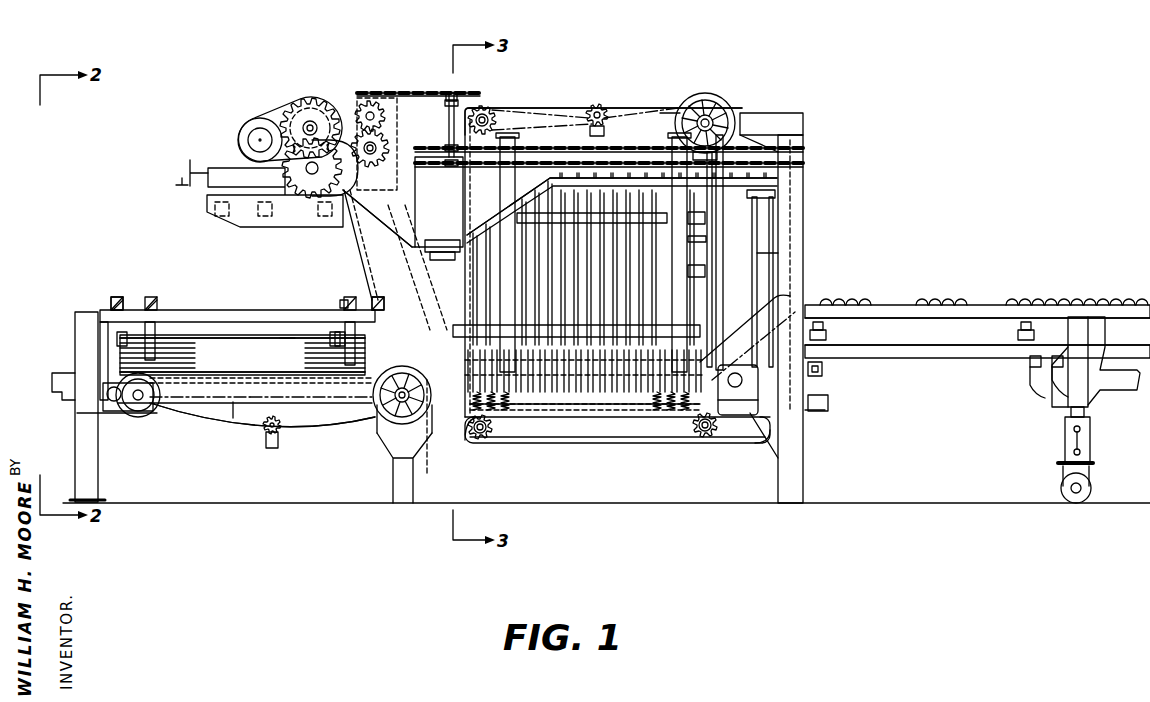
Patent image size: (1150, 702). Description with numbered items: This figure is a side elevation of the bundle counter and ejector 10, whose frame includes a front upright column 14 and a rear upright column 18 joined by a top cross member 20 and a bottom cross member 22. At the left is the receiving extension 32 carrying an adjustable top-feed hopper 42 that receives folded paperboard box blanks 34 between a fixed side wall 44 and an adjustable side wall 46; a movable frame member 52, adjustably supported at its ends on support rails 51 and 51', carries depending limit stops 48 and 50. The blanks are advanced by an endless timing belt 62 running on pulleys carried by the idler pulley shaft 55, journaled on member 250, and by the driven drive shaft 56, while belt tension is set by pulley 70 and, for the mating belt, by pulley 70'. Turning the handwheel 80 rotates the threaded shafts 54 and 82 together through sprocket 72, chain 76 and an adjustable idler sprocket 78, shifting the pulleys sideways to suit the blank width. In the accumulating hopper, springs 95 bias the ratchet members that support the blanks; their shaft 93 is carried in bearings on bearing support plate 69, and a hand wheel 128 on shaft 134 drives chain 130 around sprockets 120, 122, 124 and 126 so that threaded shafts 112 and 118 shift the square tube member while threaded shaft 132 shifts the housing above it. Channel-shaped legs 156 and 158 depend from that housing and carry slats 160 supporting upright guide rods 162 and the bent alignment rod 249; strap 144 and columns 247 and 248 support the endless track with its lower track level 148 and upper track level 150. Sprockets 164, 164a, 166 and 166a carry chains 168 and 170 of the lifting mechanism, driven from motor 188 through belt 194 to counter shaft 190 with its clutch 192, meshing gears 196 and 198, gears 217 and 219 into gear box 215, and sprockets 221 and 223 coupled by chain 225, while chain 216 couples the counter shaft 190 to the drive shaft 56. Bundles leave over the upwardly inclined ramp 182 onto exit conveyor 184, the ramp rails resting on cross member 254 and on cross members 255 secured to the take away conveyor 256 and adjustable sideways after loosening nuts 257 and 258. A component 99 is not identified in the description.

The bundle counter and ejector 10 is at (632, 95).
The front upright column 14 is at (397, 259).
The rear upright column 18 is at (800, 200).
The top cross member 20 is at (573, 112).
The bottom cross member 22 is at (583, 443).
The receiving extension 32 is at (225, 296).
The paperboard box blanks 34 is at (210, 348).
The adjustable top-feed hopper 42 is at (287, 328).
The fixed side wall 44 is at (125, 340).
The adjustable side wall 46 is at (345, 345).
The limit stop 48 is at (150, 322).
The limit stop 50 is at (347, 320).
The support rail 51 is at (100, 287).
The support rail 51' is at (382, 295).
The movable frame member 52 is at (252, 310).
The threaded shaft 54 is at (136, 414).
The timing belt idler pulley shaft 55 is at (112, 402).
The timing belt drive shaft 56 is at (429, 462).
The endless timing belt 62 is at (238, 410).
The bearing support plate 69 is at (452, 420).
The tension pulley 70 is at (200, 396).
The tension pulley 70' is at (311, 396).
The sprocket 72 is at (142, 414).
The chain 76 is at (302, 426).
The adjustable idler sprocket 78 is at (272, 436).
The handwheel 80 is at (405, 424).
The threaded shaft 82 is at (385, 422).
The shaft 93 is at (738, 388).
The springs 95 is at (515, 410).
The housing 99 is at (758, 414).
The threaded shaft 112 is at (492, 437).
The threaded shaft 118 is at (700, 438).
The sprocket 120 is at (480, 440).
The sprocket 122 is at (712, 442).
The sprocket 124 is at (489, 116).
The sprocket 126 is at (722, 96).
The hand wheel 128 is at (733, 106).
The chain 130 is at (662, 112).
The threaded shaft 132 is at (493, 110).
The shaft 134 is at (714, 123).
The support member 144 is at (547, 182).
The lower track level 148 is at (460, 247).
The upper track level 150 is at (775, 194).
The channel-shaped leg 156 is at (510, 299).
The channel-shaped leg 158 is at (706, 239).
The slats 160 is at (705, 218).
The upright guide rods 162 is at (742, 294).
The sprocket 164 is at (455, 160).
The sprocket 164a is at (503, 183).
The sprocket 166 is at (790, 148).
The sprocket 166a is at (795, 164).
The chain 168 is at (532, 150).
The chain 170 is at (645, 162).
The upwardly inclined ramp 182 is at (800, 300).
The conveyor 184 is at (978, 262).
The motor 188 is at (250, 118).
The counter shaft 190 is at (314, 120).
The clutch 192 is at (318, 124).
The belt 194 is at (274, 110).
The gear 196 is at (316, 105).
The gear 198 is at (308, 198).
The gear box 215 is at (399, 92).
The chain 216 is at (347, 258).
The gear 217 is at (392, 172).
The gear 219 is at (365, 103).
The sprocket 221 is at (377, 97).
The sprocket 223 is at (467, 107).
The chain 225 is at (446, 99).
The column 247 is at (400, 242).
The column 248 is at (760, 253).
The rod 249 is at (345, 298).
The member 250 is at (75, 340).
The cross member 254 is at (826, 376).
The cross members 255 is at (1045, 385).
The take away conveyor 256 is at (1140, 267).
The nut 257 is at (826, 330).
The nut 258 is at (1020, 334).